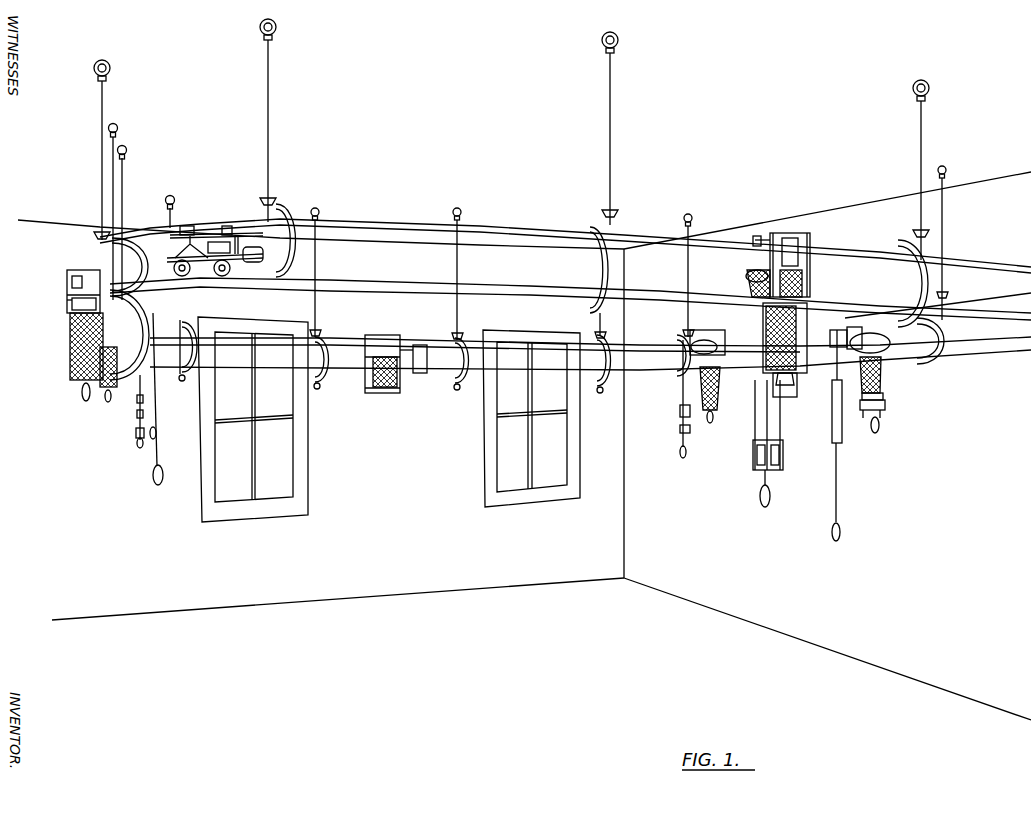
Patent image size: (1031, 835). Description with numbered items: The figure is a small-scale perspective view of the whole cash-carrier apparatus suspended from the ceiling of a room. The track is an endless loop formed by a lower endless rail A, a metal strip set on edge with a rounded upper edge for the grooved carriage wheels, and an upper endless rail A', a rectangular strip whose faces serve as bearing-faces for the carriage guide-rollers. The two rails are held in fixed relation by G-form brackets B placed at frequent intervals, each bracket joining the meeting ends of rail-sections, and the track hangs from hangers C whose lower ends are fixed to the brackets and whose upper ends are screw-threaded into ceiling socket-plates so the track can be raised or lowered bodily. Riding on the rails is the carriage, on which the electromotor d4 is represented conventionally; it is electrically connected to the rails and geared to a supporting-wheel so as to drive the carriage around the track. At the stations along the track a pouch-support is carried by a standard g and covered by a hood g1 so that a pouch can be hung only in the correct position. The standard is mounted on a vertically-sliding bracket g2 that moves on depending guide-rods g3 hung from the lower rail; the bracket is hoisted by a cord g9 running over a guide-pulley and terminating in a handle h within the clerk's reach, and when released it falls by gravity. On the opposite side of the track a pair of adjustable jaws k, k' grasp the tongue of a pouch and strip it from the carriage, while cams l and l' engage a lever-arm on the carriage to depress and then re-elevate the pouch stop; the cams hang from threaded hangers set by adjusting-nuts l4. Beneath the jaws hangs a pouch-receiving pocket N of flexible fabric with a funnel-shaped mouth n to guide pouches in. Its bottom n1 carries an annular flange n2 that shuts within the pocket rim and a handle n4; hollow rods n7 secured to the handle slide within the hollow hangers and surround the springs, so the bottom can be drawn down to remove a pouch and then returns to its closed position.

The lower endless rail A is at (570, 326).
The upper endless rail A' is at (565, 237).
The bracket B is at (527, 298).
The hanger C is at (513, 179).
The pouch-receiving pocket N is at (70, 339).
The funnel-shaped mouth n is at (790, 312).
The bottom of the pocket n1 is at (86, 401).
The annular flange n2 is at (885, 408).
The handle n4 is at (796, 385).
The hollow rods n7 is at (883, 396).
The jaw k is at (68, 291).
The jaw k' is at (52, 300).
The standard g is at (137, 412).
The hood g1 is at (773, 385).
The vertically-sliding bracket g2 is at (137, 436).
The guide-rods g3 is at (117, 380).
The cord g9 is at (155, 396).
The handle h is at (163, 475).
The electromotor d4 is at (200, 252).
The cam l is at (610, 303).
The cam l' is at (754, 250).
The adjusting-nuts l4 is at (377, 364).